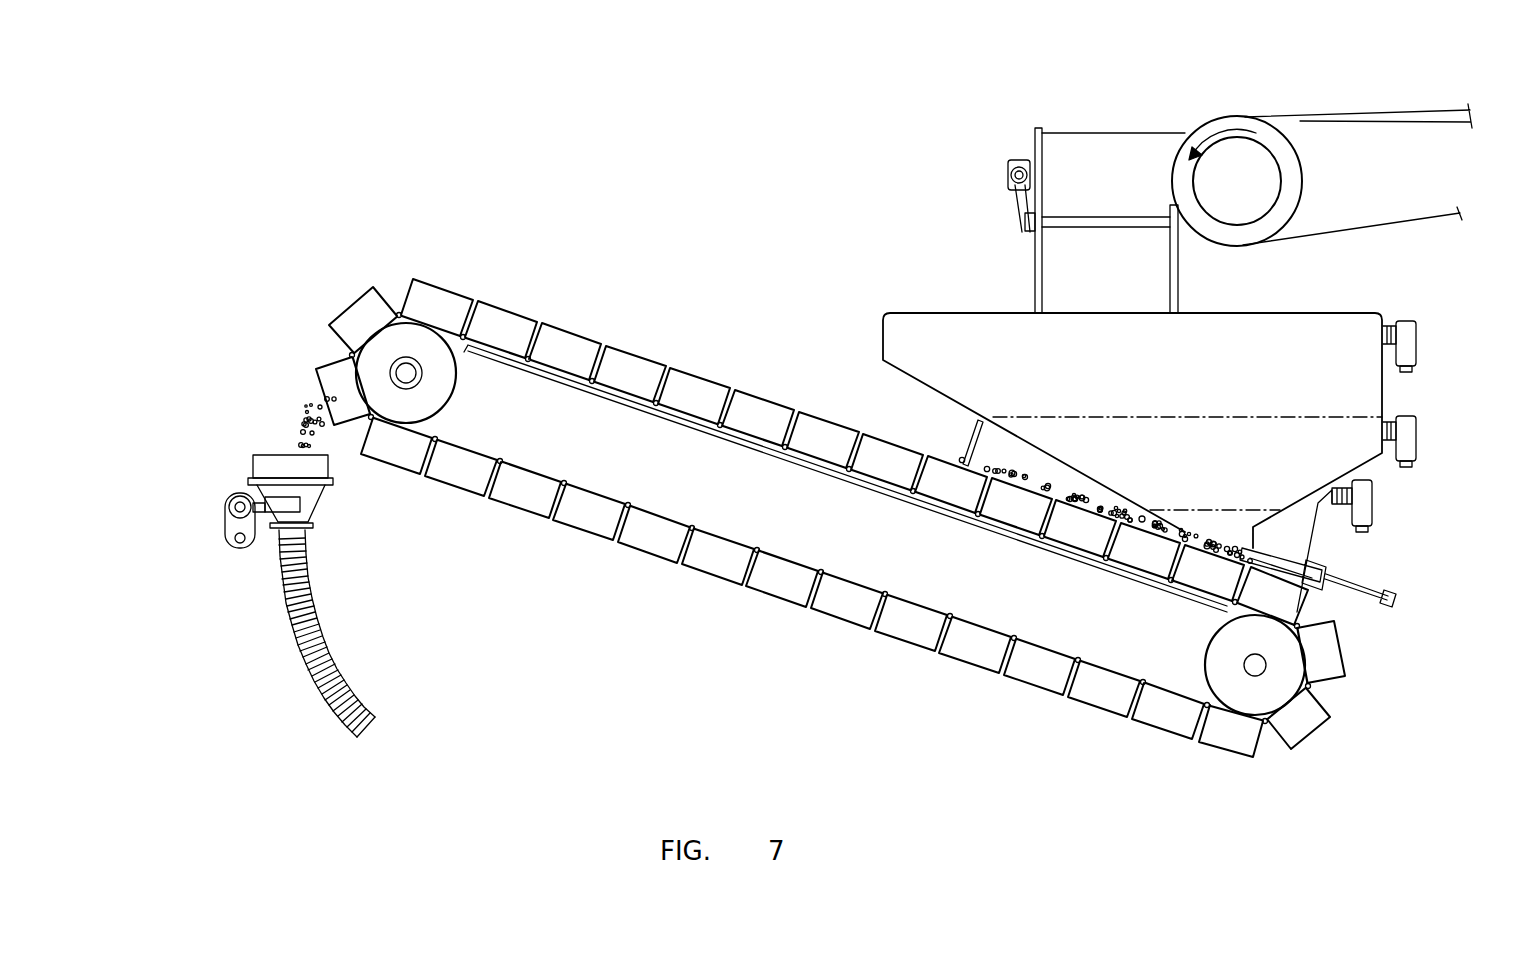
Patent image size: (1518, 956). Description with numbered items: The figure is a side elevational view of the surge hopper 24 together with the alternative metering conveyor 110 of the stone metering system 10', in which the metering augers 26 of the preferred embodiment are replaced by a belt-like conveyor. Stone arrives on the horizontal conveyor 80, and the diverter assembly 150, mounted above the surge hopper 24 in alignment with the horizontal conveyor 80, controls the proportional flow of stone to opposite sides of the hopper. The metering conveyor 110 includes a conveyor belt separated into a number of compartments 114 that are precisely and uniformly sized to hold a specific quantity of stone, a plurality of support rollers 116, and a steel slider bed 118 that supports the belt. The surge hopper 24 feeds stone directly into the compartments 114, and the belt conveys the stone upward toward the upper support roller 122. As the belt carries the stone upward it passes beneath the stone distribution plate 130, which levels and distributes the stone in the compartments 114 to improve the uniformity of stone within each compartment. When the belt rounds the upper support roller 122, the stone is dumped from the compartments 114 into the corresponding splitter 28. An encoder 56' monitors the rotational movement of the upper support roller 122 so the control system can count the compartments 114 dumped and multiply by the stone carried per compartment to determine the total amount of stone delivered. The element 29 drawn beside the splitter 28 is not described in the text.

The stone metering system 10' is at (881, 476).
The surge hopper 24 is at (1372, 306).
The metering auger 26 is at (397, 287).
The splitter 28 is at (325, 497).
The motor 29 is at (228, 520).
The encoder 56' is at (449, 470).
The horizontal conveyor 80 is at (1390, 106).
The metering conveyor 110 is at (712, 373).
The compartment 114 is at (825, 430).
The support roller 116 is at (400, 407).
The steel slider bed 118 is at (677, 427).
The upper support roller 122 is at (437, 355).
The stone distribution plate 130 is at (967, 440).
The diverter assembly 150 is at (1033, 143).